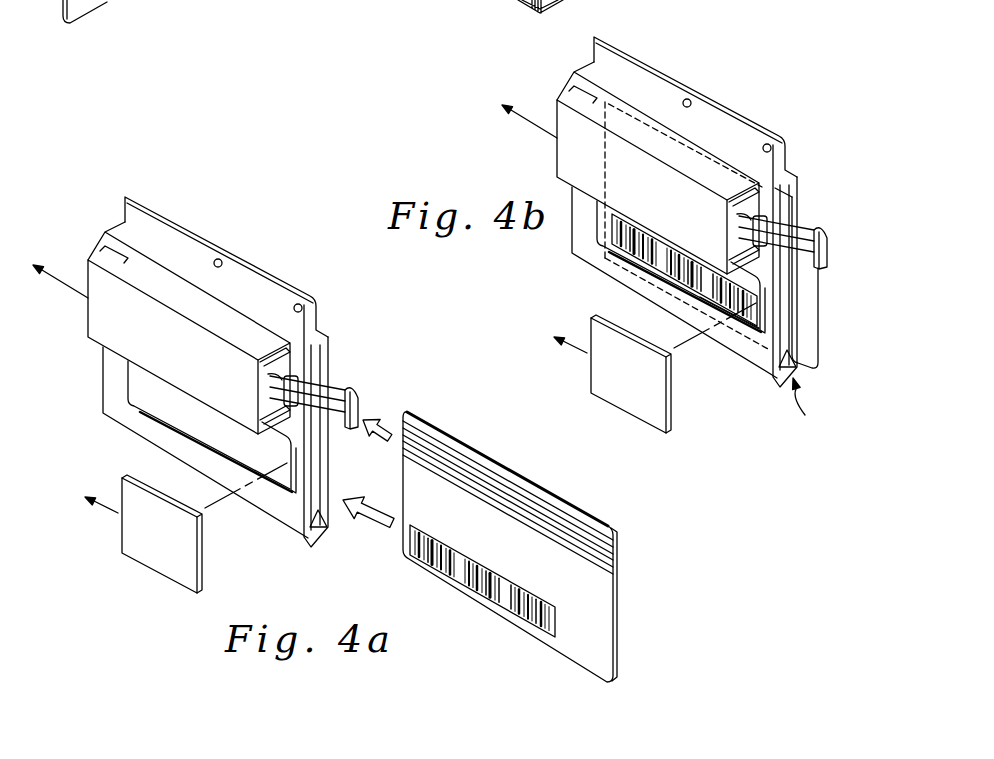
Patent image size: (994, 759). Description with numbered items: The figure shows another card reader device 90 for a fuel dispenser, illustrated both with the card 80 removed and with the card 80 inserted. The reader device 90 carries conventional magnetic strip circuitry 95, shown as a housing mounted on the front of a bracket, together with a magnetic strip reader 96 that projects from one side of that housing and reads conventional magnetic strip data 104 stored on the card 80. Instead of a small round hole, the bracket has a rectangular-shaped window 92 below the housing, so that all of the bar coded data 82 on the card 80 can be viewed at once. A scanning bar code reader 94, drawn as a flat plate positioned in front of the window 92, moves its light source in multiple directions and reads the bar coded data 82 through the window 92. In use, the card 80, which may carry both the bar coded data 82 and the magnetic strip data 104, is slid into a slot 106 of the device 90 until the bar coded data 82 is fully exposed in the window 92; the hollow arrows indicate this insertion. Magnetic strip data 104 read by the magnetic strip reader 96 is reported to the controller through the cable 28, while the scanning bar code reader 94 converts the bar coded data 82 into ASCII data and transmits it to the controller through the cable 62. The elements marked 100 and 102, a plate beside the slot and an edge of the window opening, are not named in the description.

In FIG. 4A, the cable 28 is at (84, 296).
In FIG. 4B, the cable 28 is at (529, 98).
In FIG. 4A, the cable 62 is at (110, 515).
In FIG. 4B, the cable 62 is at (559, 363).
In FIG. 4A, the card 80 is at (600, 607).
In FIG. 4B, the card 80 is at (686, 225).
In FIG. 4A, the bar coded data 82 is at (508, 602).
In FIG. 4A, the reader device 90 is at (258, 261).
In FIG. 4B, the reader device 90 is at (684, 212).
In FIG. 4A, the window 92 is at (170, 406).
In FIG. 4B, the window 92 is at (637, 274).
In FIG. 4A, the scanning bar code reader 94 is at (160, 560).
In FIG. 4B, the scanning bar code reader 94 is at (622, 380).
In FIG. 4A, the magnetic strip circuitry 95 is at (182, 358).
In FIG. 4B, the magnetic strip circuitry 95 is at (658, 168).
In FIG. 4A, the magnetic strip reader 96 is at (346, 393).
In FIG. 4B, the magnetic strip reader 96 is at (789, 220).
In FIG. 4B, the retaining plate 100 is at (807, 317).
In FIG. 4B, the card opening edge 102 is at (735, 318).
In FIG. 4A, the magnetic strip data 104 is at (435, 443).
In FIG. 4B, the slot 106 is at (812, 411).